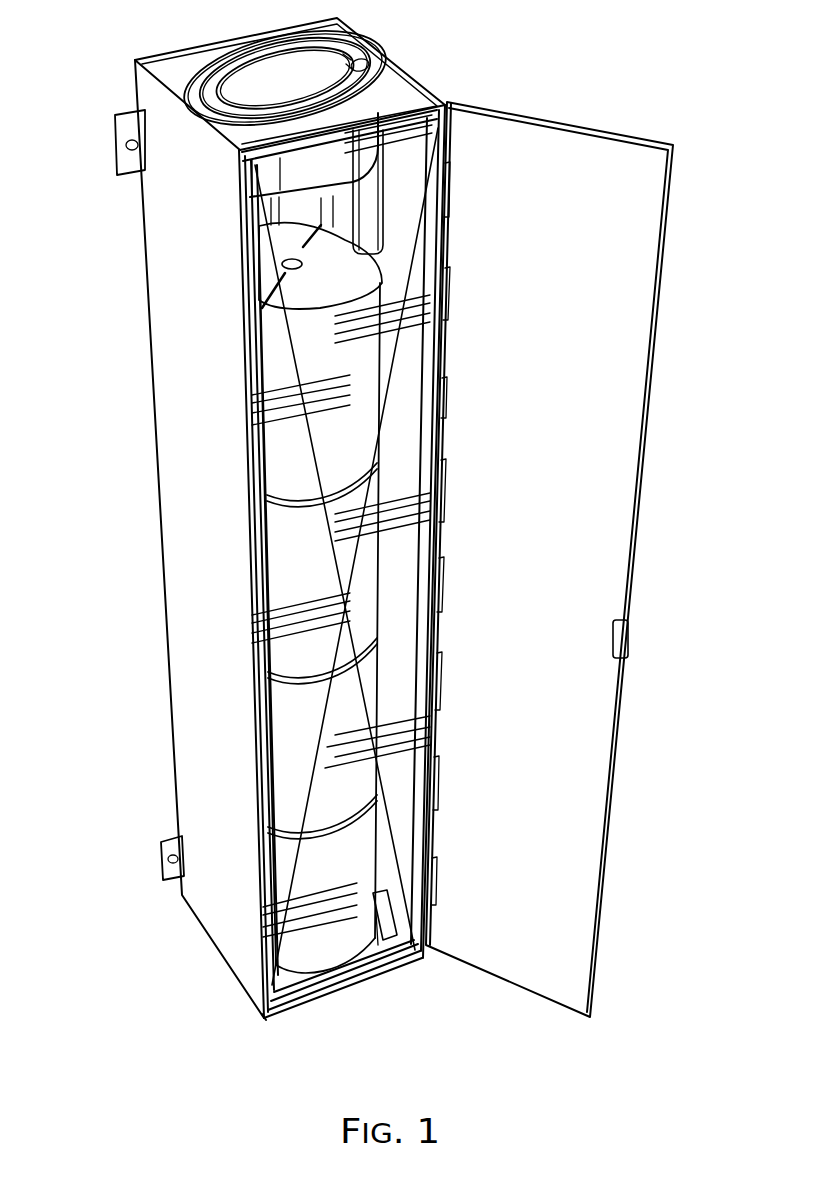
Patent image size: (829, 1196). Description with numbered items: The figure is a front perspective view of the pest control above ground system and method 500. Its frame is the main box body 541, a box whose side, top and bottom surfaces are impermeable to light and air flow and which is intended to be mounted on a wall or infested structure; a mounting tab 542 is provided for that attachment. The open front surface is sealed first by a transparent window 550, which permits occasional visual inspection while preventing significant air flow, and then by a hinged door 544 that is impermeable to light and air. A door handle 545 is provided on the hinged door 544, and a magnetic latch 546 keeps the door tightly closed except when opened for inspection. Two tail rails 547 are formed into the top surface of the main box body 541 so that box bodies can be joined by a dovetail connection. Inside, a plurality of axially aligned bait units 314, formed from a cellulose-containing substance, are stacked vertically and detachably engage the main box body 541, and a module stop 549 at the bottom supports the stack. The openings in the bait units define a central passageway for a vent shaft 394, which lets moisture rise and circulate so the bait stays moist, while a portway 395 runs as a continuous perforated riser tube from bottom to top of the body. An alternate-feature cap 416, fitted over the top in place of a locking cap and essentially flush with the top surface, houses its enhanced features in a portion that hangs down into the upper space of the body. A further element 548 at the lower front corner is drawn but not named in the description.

The pest control above ground system and method 500 is at (556, 44).
The main box body 541 is at (185, 556).
The mounting tab 542 is at (117, 131).
The hinged door 544 is at (620, 422).
The door handle 545 is at (630, 645).
The magnetic latch 546 is at (268, 630).
The tail rails 547 is at (158, 57).
The bottom corner 548 is at (272, 1026).
The module stop 549 is at (390, 935).
The transparent window 550 is at (325, 905).
The alternate-feature cap 416 is at (303, 91).
The bait units 314 is at (326, 298).
The vent shaft 394 is at (291, 259).
The portway 395 is at (362, 212).